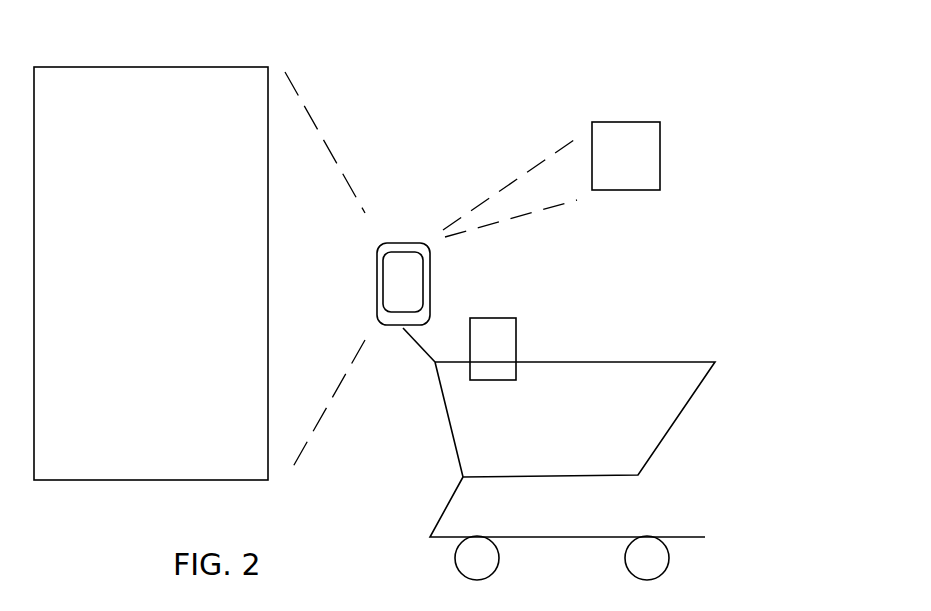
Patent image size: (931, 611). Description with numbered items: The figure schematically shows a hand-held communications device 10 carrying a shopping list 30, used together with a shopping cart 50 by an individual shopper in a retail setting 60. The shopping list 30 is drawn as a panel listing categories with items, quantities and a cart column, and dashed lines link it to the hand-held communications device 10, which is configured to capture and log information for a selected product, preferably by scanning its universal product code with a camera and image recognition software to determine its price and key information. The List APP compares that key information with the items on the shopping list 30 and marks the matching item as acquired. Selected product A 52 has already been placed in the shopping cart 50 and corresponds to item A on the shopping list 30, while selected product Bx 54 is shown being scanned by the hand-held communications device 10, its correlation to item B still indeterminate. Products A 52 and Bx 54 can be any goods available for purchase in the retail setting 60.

The shopping list 30 is at (135, 65).
The hand-held communications device 10 is at (398, 243).
The selected product Bx 54 is at (662, 153).
The selected product A 52 is at (517, 343).
The shopping cart 50 is at (683, 408).
The retail setting 60 is at (772, 327).